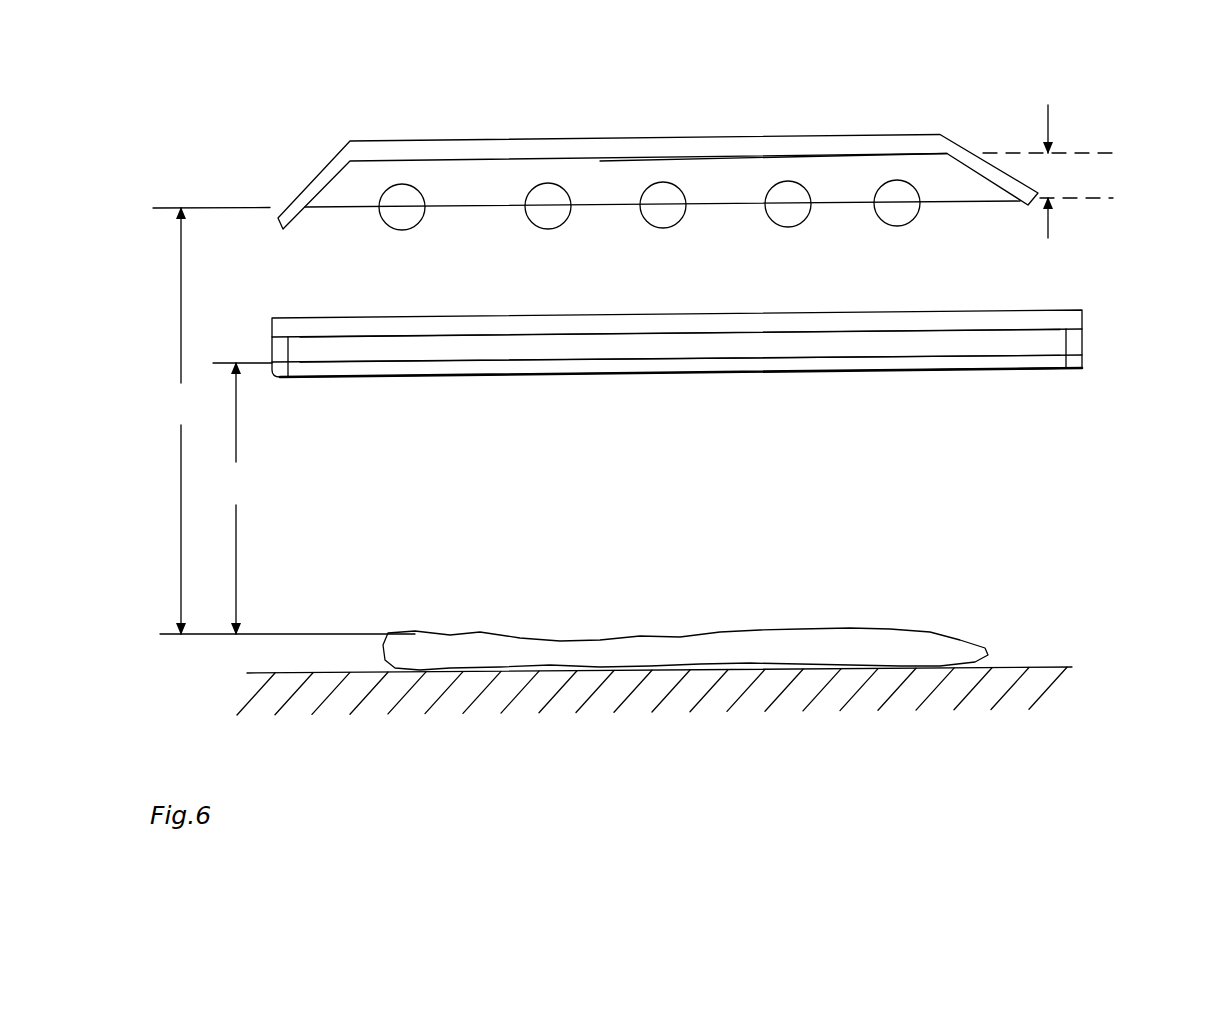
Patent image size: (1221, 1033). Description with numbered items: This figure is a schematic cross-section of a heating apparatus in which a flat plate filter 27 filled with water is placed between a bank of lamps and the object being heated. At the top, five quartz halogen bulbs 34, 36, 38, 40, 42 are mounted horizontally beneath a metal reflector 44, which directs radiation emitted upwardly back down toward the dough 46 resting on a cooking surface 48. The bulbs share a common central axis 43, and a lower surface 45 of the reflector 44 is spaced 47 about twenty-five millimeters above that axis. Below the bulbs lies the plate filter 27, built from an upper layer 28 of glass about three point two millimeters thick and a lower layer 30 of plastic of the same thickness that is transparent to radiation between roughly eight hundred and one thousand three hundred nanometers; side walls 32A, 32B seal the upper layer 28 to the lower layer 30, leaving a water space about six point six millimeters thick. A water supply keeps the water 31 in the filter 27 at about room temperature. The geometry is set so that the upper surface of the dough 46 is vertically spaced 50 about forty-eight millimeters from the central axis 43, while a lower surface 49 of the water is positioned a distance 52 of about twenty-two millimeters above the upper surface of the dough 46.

The flat plate filter 27 is at (932, 440).
The upper layer 28 is at (997, 320).
The lower layer 30 is at (983, 357).
The water 31 is at (680, 347).
The side wall 32A is at (280, 352).
The side wall 32B is at (1080, 338).
The quartz halogen bulb 34 is at (407, 195).
The quartz halogen bulb 36 is at (555, 195).
The quartz halogen bulb 38 is at (667, 195).
The quartz halogen bulb 40 is at (792, 197).
The quartz halogen bulb 42 is at (902, 190).
The central axis 43 is at (222, 208).
The metal reflector 44 is at (757, 145).
The lower surface of the reflector 45 is at (865, 172).
The dough 46 is at (902, 647).
The spacing 47 is at (1051, 171).
The cooking surface 48 is at (1015, 667).
The lower surface of the water 49 is at (1045, 370).
The vertical spacing 50 is at (287, 421).
The spacing 52 is at (242, 498).